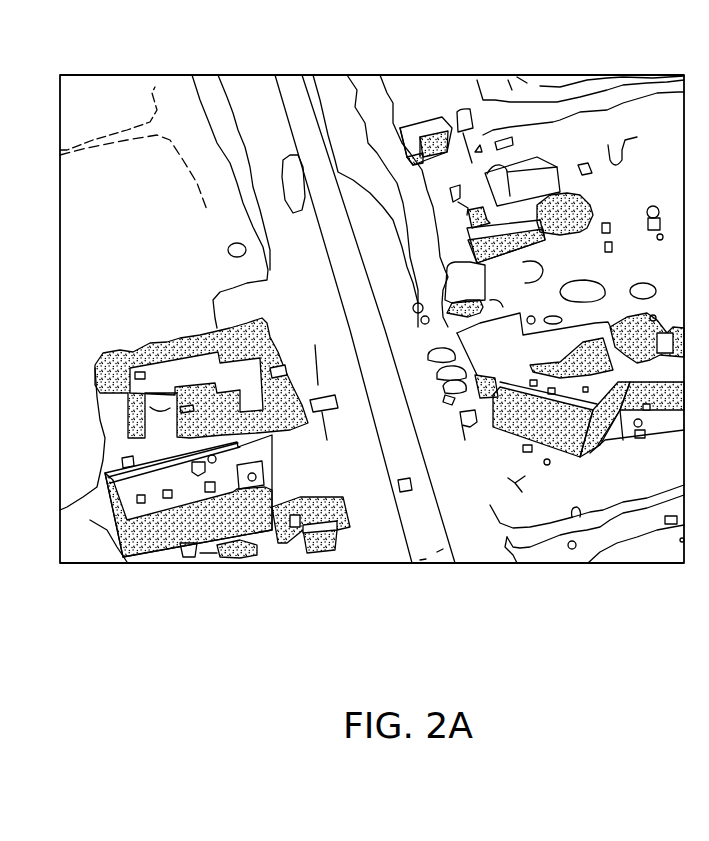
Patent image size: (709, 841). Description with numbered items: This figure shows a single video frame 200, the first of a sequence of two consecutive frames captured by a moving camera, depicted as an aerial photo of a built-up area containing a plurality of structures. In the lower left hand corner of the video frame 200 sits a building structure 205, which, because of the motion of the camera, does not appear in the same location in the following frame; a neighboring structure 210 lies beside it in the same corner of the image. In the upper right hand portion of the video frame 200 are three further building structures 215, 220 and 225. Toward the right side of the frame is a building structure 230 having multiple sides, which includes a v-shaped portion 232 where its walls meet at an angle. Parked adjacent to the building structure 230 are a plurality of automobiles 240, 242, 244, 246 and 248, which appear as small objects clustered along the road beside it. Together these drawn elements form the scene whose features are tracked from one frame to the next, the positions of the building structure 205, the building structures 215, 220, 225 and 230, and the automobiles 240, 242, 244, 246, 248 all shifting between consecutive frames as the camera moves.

The video frame 200 is at (645, 575).
The building structure 205 is at (182, 372).
The structure 210 is at (105, 473).
The building structure 215 is at (538, 158).
The building structure 220 is at (432, 128).
The building structure 225 is at (500, 245).
The building structure 230 is at (575, 392).
The v-shaped portion 232 is at (590, 428).
The automobile 240 is at (467, 430).
The automobile 242 is at (445, 398).
The automobile 244 is at (443, 388).
The automobile 246 is at (428, 355).
The automobile 248 is at (437, 376).